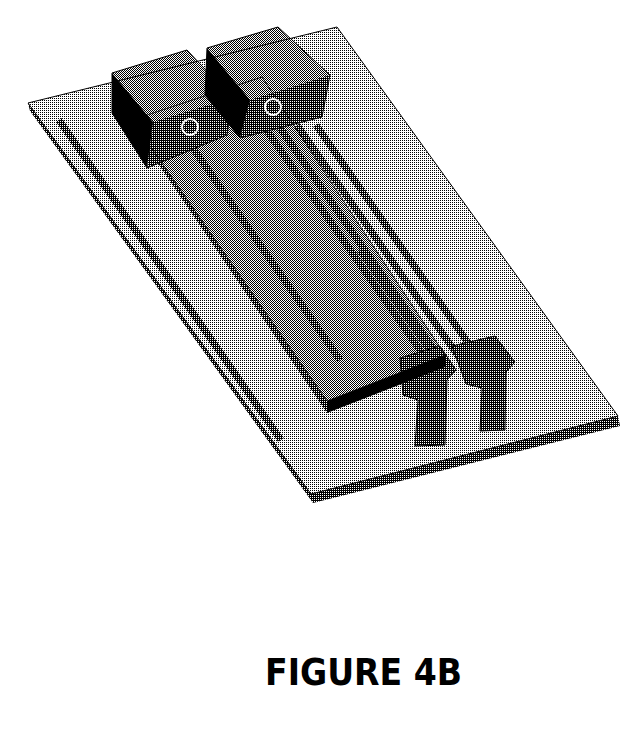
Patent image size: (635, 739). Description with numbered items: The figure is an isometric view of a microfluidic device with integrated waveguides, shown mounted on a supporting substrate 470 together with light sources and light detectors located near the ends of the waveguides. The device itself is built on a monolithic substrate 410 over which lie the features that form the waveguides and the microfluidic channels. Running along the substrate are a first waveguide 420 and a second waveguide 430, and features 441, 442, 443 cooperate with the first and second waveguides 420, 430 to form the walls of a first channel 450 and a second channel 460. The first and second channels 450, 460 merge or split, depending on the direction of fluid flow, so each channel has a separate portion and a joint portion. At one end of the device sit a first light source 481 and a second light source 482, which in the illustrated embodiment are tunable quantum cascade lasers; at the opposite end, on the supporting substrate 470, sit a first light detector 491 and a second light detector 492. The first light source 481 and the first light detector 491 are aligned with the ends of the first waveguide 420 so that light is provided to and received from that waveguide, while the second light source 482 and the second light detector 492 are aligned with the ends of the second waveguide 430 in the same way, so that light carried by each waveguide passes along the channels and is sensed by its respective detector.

The monolithic substrate 410 is at (343, 343).
The first waveguide 420 is at (456, 242).
The second waveguide 430 is at (170, 280).
The feature 441 is at (489, 299).
The feature 442 is at (403, 225).
The feature 443 is at (271, 227).
The first channel 450 is at (429, 233).
The second channel 460 is at (379, 213).
The supporting substrate 470 is at (574, 388).
The first light source 481 is at (185, 103).
The second light source 482 is at (280, 76).
The first light detector 491 is at (458, 438).
The second light detector 492 is at (513, 426).